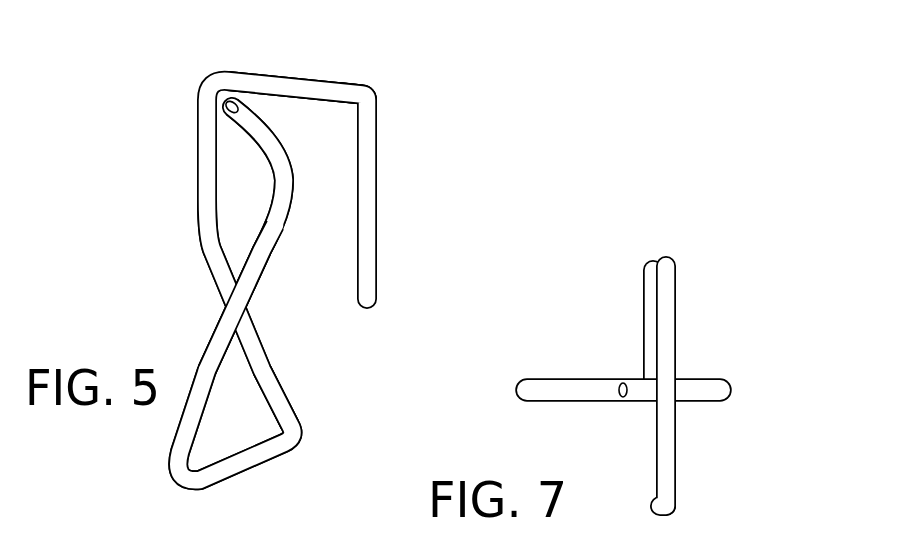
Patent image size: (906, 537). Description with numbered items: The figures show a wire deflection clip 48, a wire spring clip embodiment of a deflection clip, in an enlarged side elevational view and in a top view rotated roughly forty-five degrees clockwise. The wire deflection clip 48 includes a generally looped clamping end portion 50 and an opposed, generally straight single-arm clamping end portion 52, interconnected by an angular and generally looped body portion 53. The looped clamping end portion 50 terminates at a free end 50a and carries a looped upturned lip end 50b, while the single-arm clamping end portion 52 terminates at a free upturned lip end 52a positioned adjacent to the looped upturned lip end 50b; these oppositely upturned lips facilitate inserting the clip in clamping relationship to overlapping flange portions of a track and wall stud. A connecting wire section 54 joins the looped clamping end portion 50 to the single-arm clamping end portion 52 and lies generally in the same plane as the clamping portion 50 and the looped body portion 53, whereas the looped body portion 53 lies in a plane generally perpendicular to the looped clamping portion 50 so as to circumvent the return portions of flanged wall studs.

In FIG. 5, the wire deflection clip 48 is at (384, 73).
In FIG. 7, the wire deflection clip 48 is at (558, 422).
In FIG. 5, the looped clamping end portion 50 is at (334, 71).
In FIG. 7, the looped clamping end portion 50 is at (662, 253).
In FIG. 5, the free end 50a is at (282, 73).
In FIG. 7, the free end 50a is at (650, 507).
In FIG. 5, the looped upturned lip end 50b is at (377, 110).
In FIG. 7, the looped upturned lip end 50b is at (652, 260).
In FIG. 5, the straight clamping end portion 52 is at (285, 217).
In FIG. 7, the straight clamping end portion 52 is at (717, 402).
In FIG. 5, the free upturned lip end 52a is at (230, 103).
In FIG. 7, the free upturned lip end 52a is at (620, 385).
In FIG. 5, the looped body portion 53 is at (247, 467).
In FIG. 5, the connecting wire section 54 is at (268, 362).
In FIG. 7, the connecting wire section 54 is at (672, 327).